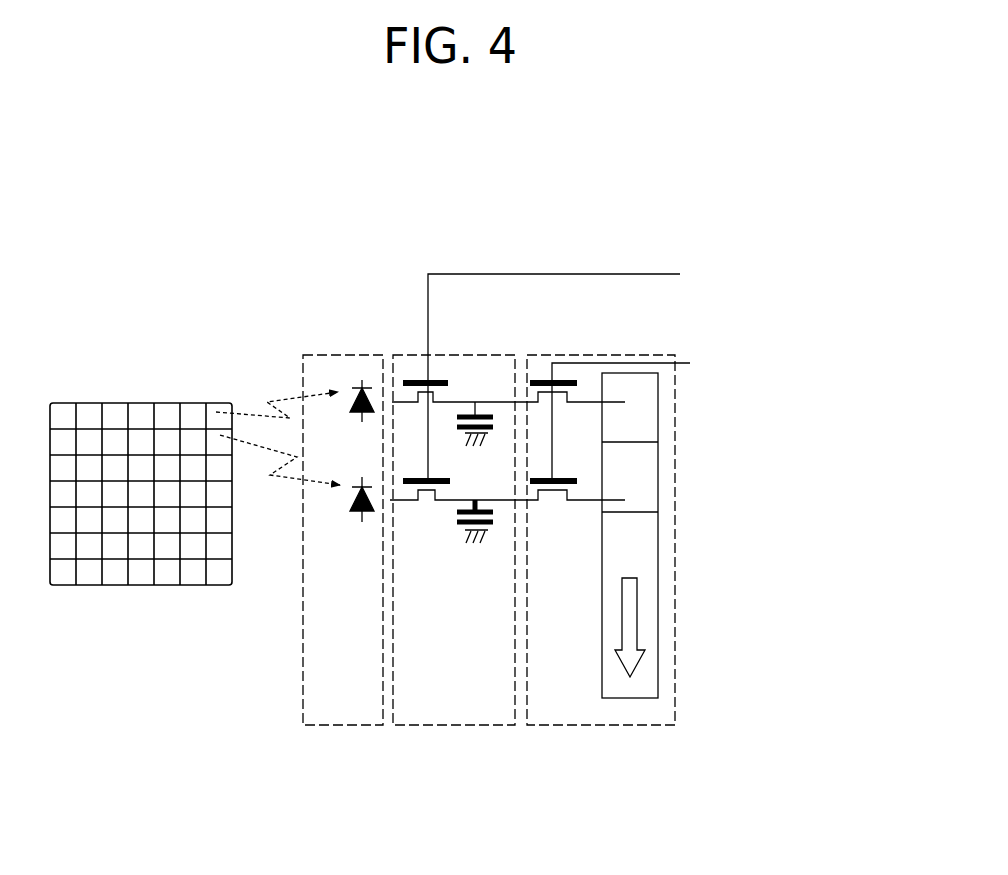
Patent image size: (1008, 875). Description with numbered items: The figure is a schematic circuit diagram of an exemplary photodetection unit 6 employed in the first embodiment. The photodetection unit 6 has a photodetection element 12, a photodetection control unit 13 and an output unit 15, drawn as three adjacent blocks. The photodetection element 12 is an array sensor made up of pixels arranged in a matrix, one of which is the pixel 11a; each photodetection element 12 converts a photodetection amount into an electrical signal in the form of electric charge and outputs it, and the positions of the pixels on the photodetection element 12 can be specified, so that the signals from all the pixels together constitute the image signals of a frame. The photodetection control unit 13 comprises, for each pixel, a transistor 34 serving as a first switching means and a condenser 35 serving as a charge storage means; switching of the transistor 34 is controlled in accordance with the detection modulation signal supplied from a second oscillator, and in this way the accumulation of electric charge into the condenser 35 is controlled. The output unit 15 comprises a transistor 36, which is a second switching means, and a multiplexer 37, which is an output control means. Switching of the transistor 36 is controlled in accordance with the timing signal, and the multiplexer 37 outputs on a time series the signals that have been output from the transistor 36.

The photodetection unit 6 is at (343, 312).
The pixel 11a is at (218, 416).
The photodetection element 12 is at (137, 402).
The photodetection control unit 13 is at (450, 727).
The output unit 15 is at (675, 565).
The transistor 34 is at (415, 380).
The condenser 35 is at (478, 413).
The transistor 36 is at (562, 380).
The multiplexer 37 is at (660, 672).